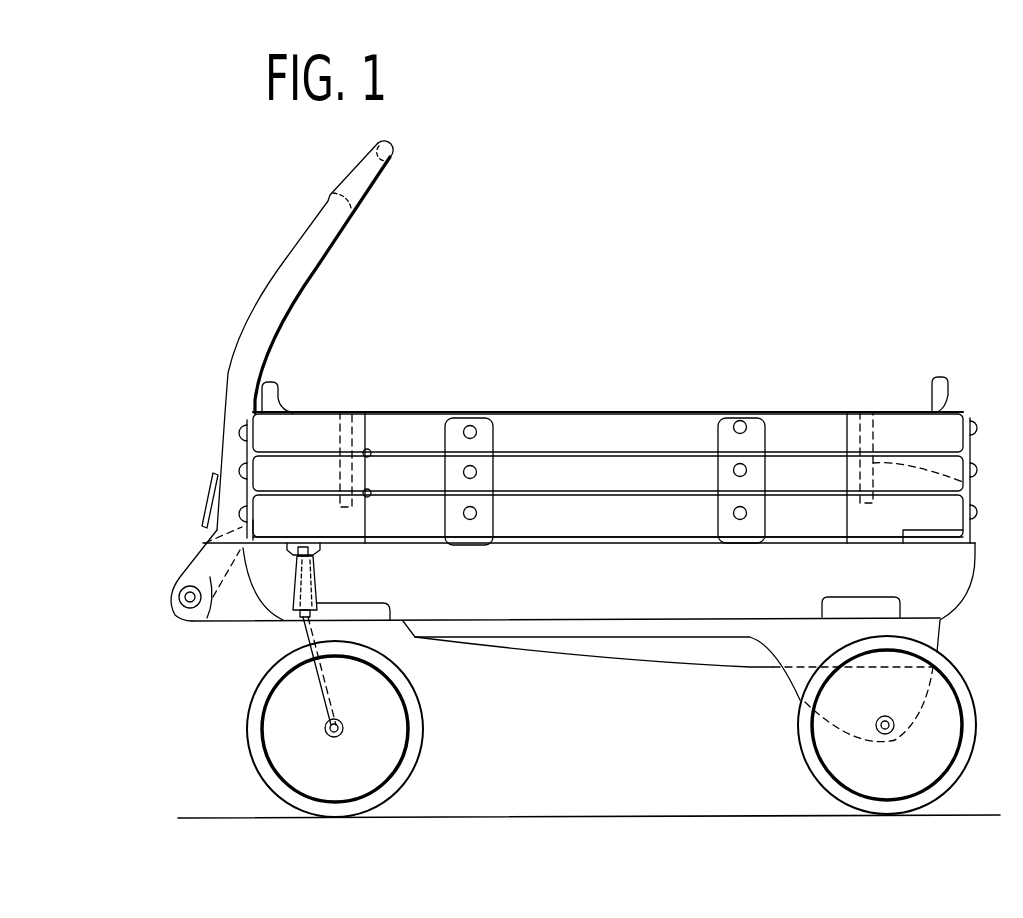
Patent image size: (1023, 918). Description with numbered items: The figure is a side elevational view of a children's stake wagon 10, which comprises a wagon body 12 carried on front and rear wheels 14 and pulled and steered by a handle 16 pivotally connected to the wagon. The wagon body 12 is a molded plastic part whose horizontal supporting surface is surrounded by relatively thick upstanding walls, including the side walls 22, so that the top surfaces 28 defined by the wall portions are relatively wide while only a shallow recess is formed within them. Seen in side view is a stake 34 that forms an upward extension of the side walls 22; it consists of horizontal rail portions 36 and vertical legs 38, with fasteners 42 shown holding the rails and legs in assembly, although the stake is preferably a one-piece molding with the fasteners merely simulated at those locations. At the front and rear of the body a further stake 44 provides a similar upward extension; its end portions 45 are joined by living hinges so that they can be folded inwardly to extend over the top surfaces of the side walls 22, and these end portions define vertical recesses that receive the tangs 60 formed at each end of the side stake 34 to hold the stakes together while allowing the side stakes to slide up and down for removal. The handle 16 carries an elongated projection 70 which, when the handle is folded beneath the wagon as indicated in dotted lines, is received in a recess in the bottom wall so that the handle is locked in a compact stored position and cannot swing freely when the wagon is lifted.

The children's stake wagon 10 is at (571, 386).
The wagon body 12 is at (933, 577).
The front and rear wheels 14 is at (287, 722).
The pulling and steering handle 16 is at (236, 377).
The side walls 22 is at (559, 602).
The top surfaces 28 is at (523, 543).
The stake 34 is at (682, 412).
The horizontal rail portions 36 is at (400, 473).
The vertical legs 38 is at (480, 443).
The fasteners 42 is at (470, 513).
The stake 44 is at (306, 410).
The end portions 45 is at (942, 425).
The tangs 60 is at (953, 481).
The elongated projection 70 is at (203, 507).